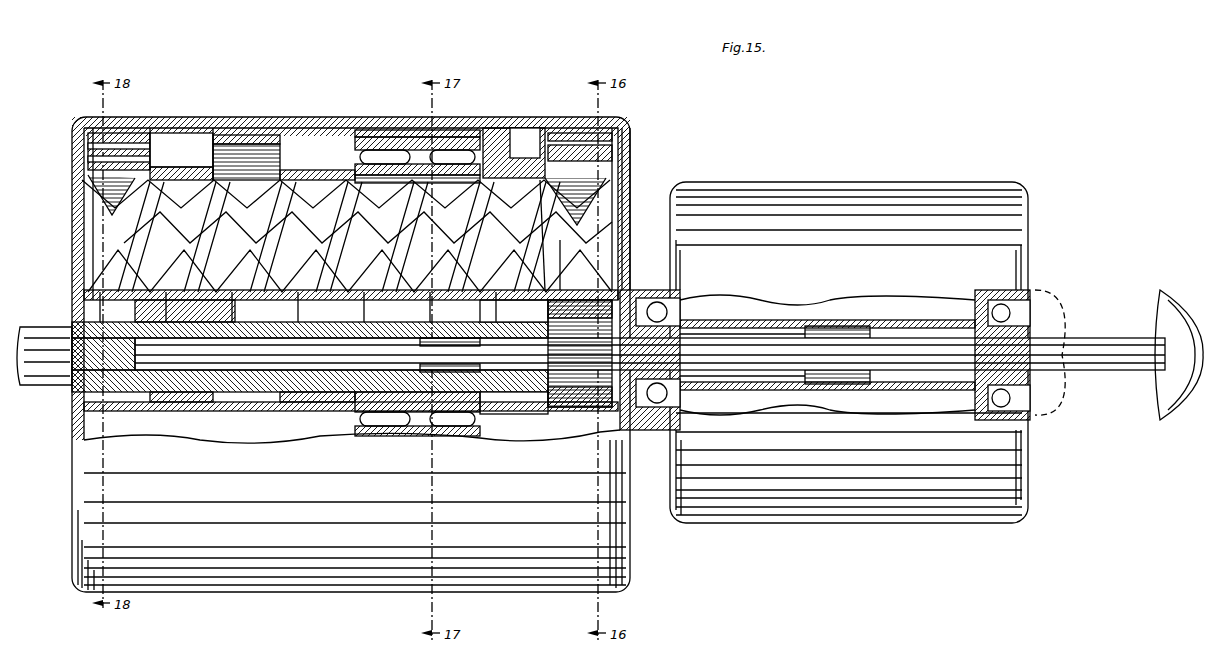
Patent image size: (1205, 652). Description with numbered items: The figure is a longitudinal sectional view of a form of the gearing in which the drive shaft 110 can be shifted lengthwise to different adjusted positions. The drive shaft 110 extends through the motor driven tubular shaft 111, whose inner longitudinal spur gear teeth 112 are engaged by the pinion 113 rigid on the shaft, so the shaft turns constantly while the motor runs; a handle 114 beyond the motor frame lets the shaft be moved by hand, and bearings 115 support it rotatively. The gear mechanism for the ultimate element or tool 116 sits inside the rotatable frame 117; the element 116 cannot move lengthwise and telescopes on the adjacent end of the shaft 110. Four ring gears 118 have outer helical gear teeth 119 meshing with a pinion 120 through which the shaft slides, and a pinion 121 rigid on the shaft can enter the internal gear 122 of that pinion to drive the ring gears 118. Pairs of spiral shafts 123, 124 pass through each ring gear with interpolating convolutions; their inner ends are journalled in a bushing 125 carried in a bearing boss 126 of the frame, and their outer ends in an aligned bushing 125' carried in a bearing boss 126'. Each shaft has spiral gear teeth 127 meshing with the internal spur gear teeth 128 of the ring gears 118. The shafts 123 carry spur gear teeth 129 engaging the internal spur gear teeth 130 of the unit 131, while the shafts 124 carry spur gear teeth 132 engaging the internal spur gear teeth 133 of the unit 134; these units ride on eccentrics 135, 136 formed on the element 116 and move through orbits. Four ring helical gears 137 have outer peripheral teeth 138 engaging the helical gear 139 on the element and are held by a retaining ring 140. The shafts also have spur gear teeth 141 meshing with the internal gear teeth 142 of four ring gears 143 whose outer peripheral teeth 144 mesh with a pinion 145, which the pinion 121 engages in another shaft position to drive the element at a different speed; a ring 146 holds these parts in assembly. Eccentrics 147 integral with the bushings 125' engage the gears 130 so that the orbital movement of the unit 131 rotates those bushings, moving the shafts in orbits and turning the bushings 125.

The drive shaft 110 is at (752, 345).
The tubular shaft 111 is at (790, 320).
The longitudinal spur gear teeth 112 is at (770, 380).
The pinion 113 is at (845, 376).
The handle 114 is at (1160, 385).
The bearings 115 is at (668, 306).
The element 116 is at (48, 326).
The frame 117 is at (335, 108).
The ring gears 118 is at (395, 148).
The helical gear teeth 119 is at (372, 130).
The pinion 120 is at (482, 316).
The pinion 121 is at (588, 415).
The internal gear 122 is at (490, 380).
The spiral shaft 123 is at (93, 234).
The spiral shaft 124 is at (90, 195).
The bushing 125 is at (551, 295).
The bushing 125' is at (190, 293).
The bearing boss 126 is at (516, 278).
The bearing boss 126' is at (181, 280).
The gear teeth 127 is at (385, 205).
The internal spur gear teeth 128 is at (455, 175).
The spur gear teeth 129 is at (270, 232).
The internal spur gear teeth 130 is at (252, 135).
The unit 131 is at (235, 134).
The spur gear teeth 132 is at (320, 212).
The internal spur gear teeth 133 is at (340, 172).
The unit 134 is at (310, 172).
The eccentric 135 is at (232, 345).
The eccentric 136 is at (322, 438).
The ring helical gears 137 is at (88, 158).
The outer peripheral teeth 138 is at (88, 145).
The helical gear 139 is at (150, 325).
The retaining ring 140 is at (104, 132).
The spur gear teeth 141 is at (624, 215).
The internal gear teeth 142 is at (552, 233).
The ring gears 143 is at (630, 150).
The outer peripheral teeth 144 is at (630, 134).
The pinion 145 is at (572, 290).
The ring 146 is at (570, 132).
The eccentric 147 is at (218, 130).